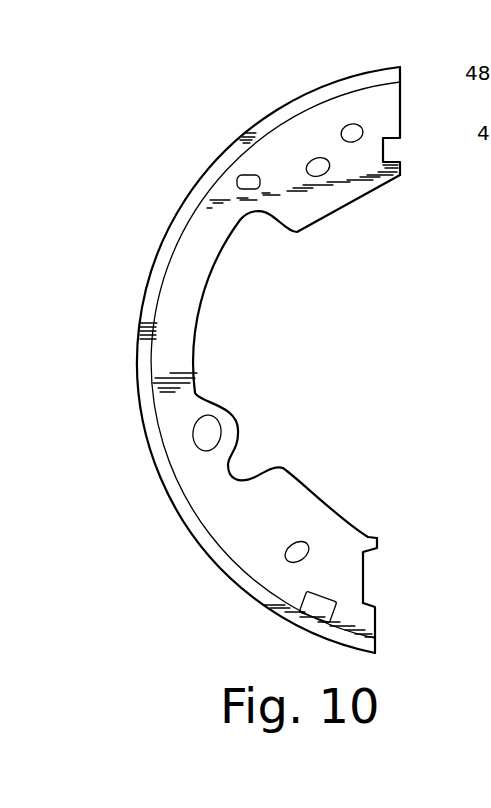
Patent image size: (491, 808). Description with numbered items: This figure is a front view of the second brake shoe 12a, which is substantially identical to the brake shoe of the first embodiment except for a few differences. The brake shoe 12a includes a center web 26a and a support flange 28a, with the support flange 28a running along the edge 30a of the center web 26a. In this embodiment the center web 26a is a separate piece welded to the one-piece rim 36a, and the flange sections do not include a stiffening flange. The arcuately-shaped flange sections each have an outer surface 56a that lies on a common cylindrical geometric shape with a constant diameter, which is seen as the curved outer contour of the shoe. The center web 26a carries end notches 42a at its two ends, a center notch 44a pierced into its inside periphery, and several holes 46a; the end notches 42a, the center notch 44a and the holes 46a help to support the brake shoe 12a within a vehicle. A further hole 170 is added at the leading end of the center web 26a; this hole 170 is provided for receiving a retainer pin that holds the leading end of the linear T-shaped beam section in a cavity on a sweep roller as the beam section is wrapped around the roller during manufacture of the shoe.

The second brake shoe 12a is at (193, 132).
The center web 26a is at (226, 271).
The support flange 28a is at (150, 260).
The edge of the center web 30a is at (197, 213).
The rim 36a is at (173, 220).
The end notches 42a is at (385, 147).
The center notch 44a is at (200, 327).
The holes 46a is at (316, 165).
The outer surface 56a is at (327, 83).
The hole 170 is at (353, 132).